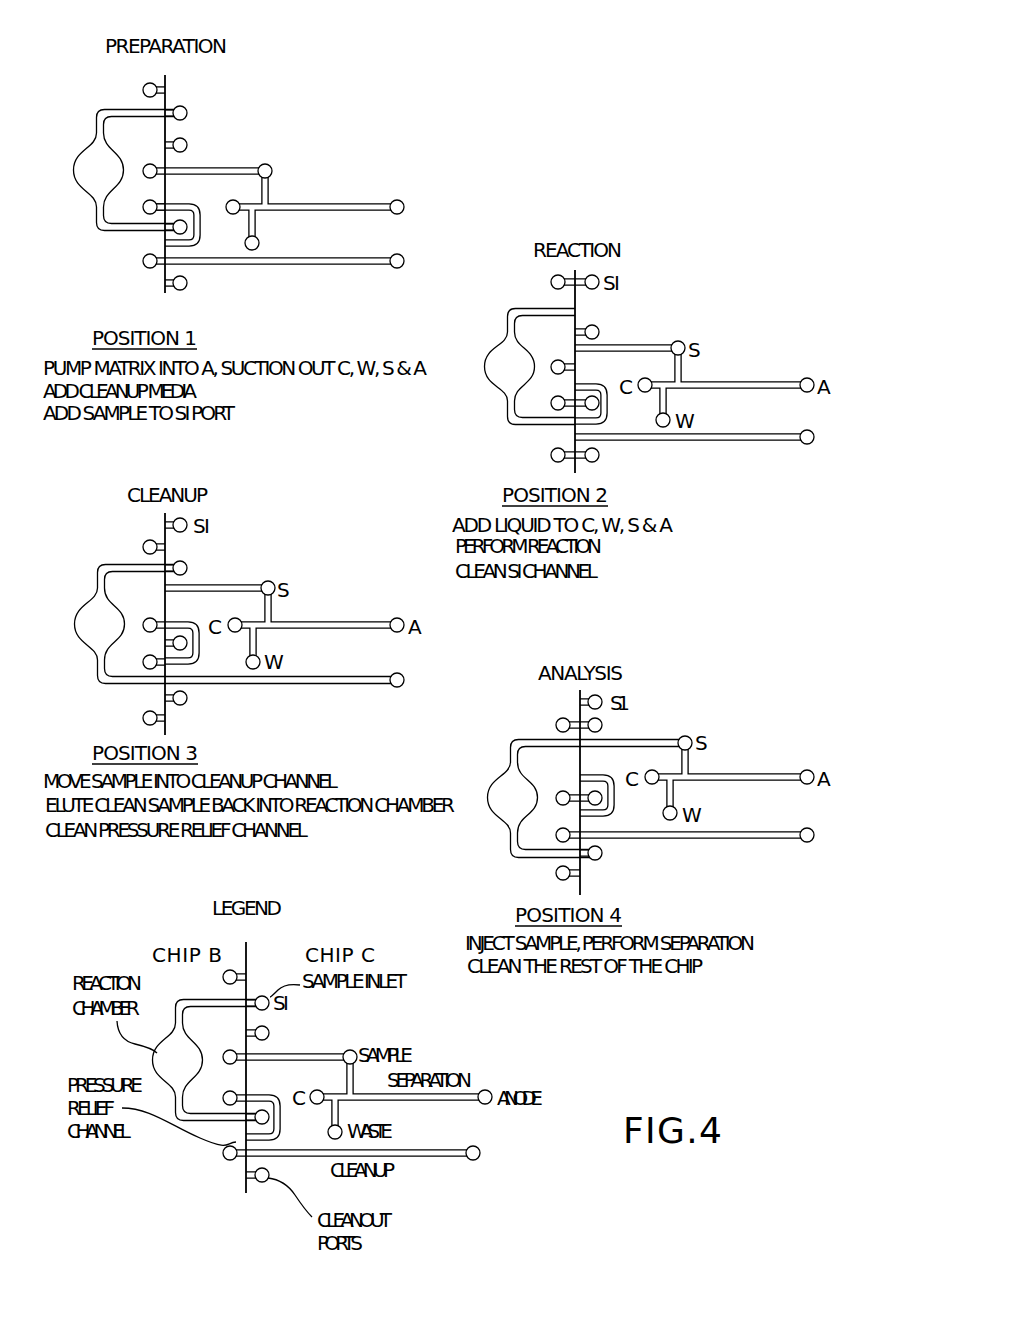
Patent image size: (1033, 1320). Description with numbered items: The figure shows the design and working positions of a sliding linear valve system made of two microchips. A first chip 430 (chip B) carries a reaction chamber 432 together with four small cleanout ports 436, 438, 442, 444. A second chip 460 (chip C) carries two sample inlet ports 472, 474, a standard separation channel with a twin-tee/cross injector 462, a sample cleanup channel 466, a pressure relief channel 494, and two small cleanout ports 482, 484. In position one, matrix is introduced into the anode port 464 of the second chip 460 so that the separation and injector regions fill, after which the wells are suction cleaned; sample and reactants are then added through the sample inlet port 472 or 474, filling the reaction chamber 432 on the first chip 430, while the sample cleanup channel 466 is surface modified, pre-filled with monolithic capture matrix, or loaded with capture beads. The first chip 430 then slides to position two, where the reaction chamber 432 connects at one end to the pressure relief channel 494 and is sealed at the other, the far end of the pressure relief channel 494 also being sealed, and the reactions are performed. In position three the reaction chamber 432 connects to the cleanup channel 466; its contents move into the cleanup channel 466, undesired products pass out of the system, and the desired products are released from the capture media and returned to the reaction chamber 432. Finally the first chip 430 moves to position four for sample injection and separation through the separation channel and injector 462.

The first chip 430 is at (80, 80).
The reaction chamber 432 is at (98, 170).
The cleanout port 436 is at (143, 91).
The cleanout port 438 is at (144, 266).
The cleanout port 442 is at (145, 167).
The cleanout port 444 is at (145, 214).
The second chip 460 is at (341, 83).
The separation channel with twin-tee/cross injector 462 is at (324, 203).
The anode port 464 is at (402, 199).
The sample cleanup channel 466 is at (328, 257).
The sample inlet port 472 is at (187, 108).
The sample inlet port 474 is at (188, 231).
The cleanout port 482 is at (188, 142).
The cleanout port 484 is at (188, 285).
The pressure relief channel 494 is at (195, 207).